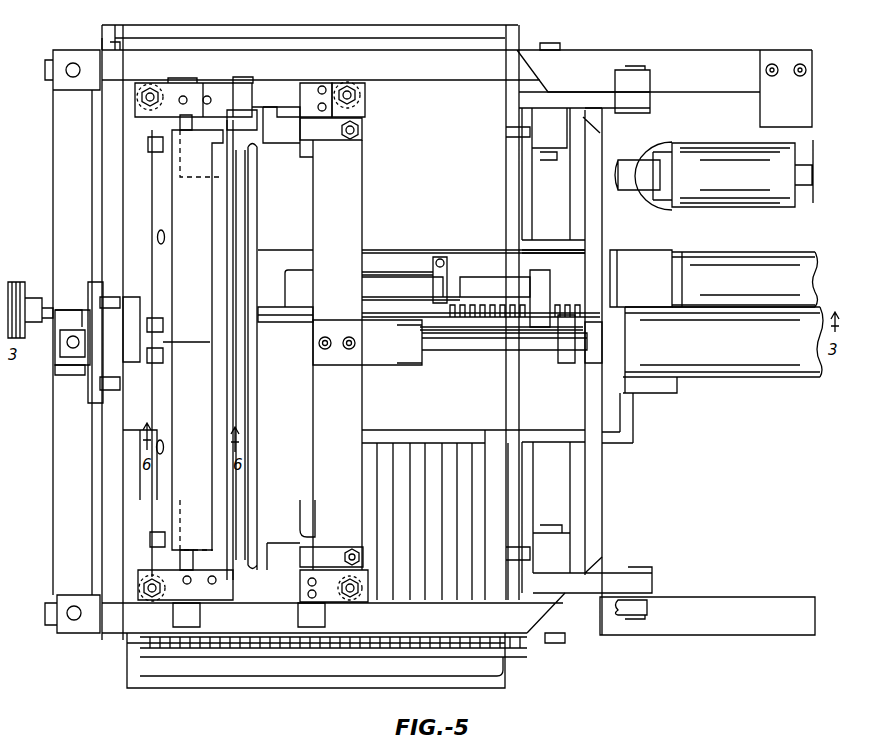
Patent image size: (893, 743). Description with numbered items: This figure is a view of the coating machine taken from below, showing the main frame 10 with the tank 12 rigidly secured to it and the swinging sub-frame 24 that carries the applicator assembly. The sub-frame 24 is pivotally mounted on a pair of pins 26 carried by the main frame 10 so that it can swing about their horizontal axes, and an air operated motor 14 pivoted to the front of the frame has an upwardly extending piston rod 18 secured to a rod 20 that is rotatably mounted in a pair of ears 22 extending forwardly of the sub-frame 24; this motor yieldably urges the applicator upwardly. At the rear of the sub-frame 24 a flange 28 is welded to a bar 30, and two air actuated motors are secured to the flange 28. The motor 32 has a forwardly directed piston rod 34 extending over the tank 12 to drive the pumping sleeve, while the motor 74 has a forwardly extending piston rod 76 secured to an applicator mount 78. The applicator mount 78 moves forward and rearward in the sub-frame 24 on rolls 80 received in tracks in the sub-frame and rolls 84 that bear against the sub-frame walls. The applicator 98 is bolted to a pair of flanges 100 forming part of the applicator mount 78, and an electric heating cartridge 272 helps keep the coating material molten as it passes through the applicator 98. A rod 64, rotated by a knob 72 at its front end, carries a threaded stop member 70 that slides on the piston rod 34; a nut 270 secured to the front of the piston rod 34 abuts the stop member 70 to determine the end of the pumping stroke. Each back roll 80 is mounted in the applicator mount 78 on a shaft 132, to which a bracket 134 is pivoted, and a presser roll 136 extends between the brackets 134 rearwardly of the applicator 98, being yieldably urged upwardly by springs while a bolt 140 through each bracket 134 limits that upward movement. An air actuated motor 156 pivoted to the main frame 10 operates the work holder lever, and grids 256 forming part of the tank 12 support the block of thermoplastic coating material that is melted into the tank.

The main frame 10 is at (692, 640).
The tank 12 is at (535, 412).
The air operated motor 14 is at (50, 355).
The piston rod 18 is at (55, 340).
The rod 20 is at (60, 376).
The ears 22 is at (68, 320).
The sub-frame 24 is at (451, 60).
The pins 26 is at (558, 643).
The flange 28 is at (650, 268).
The bar 30 is at (597, 488).
The air actuated motor 32 is at (740, 262).
The piston rod 34 is at (495, 282).
The rod 64 is at (270, 307).
The stop member 70 is at (540, 277).
The knob 72 is at (20, 282).
The air actuated motor 74 is at (755, 373).
The piston rod 76 is at (482, 338).
The applicator mount 78 is at (340, 170).
The rolls 80 is at (322, 612).
The rolls 84 is at (150, 600).
The applicator 98 is at (185, 210).
The flanges 100 is at (128, 156).
The shaft 132 is at (305, 548).
The bracket 134 is at (305, 520).
The roll 136 is at (248, 375).
The bolt 140 is at (350, 588).
The air actuated motor 156 is at (725, 155).
The grids 256 is at (460, 460).
The nut 270 is at (455, 280).
The electric heating cartridge 272 is at (178, 124).